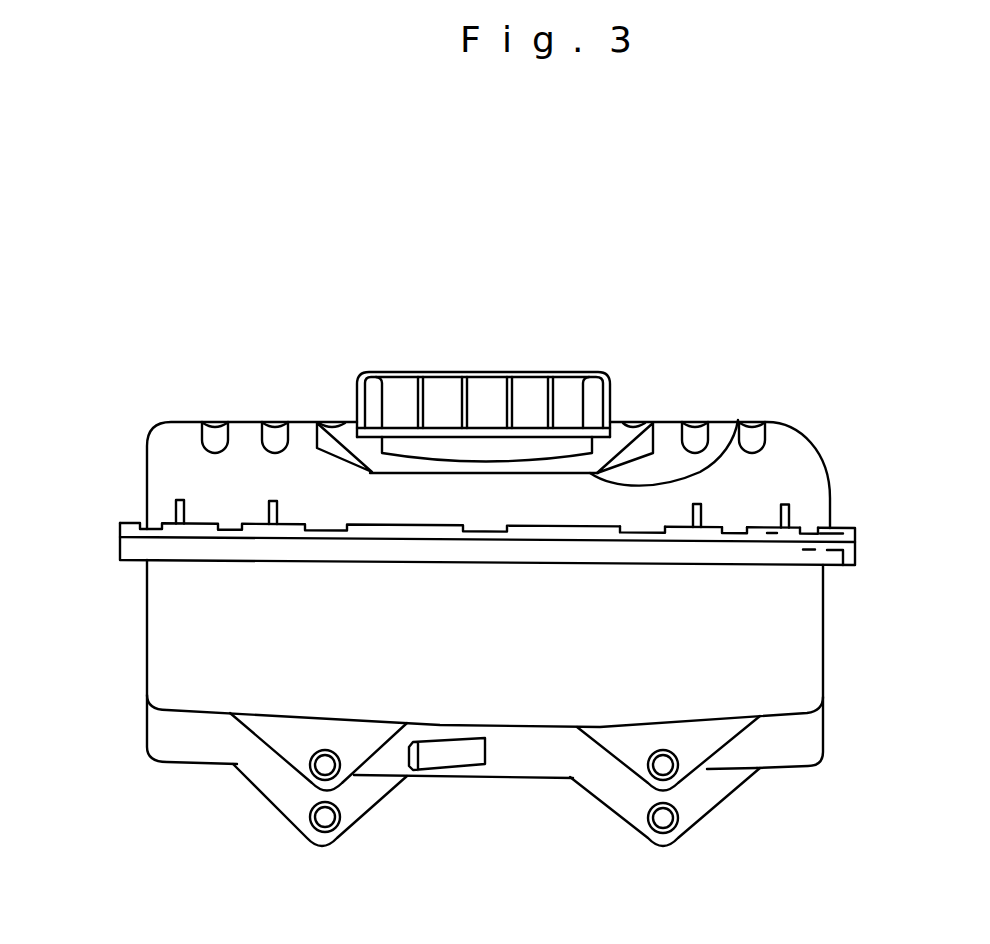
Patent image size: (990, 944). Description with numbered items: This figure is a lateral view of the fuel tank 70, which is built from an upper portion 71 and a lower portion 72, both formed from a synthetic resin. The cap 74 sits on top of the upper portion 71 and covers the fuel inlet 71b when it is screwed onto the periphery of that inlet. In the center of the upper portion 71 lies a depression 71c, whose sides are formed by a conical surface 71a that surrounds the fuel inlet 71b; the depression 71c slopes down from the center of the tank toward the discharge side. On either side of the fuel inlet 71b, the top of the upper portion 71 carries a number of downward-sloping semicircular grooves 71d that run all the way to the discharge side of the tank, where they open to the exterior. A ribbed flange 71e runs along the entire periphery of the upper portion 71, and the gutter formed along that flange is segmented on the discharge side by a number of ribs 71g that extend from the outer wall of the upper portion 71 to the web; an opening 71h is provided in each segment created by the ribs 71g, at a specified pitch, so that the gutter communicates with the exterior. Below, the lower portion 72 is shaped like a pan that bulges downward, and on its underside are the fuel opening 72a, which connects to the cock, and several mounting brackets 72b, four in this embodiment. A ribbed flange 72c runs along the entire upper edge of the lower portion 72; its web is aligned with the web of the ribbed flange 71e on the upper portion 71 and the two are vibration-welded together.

The fuel tank 70 is at (307, 372).
The upper portion 71 is at (148, 442).
The conical surface 71a is at (598, 447).
The fuel inlet 71b is at (631, 421).
The depression 71c is at (738, 421).
The semicircular grooves 71d is at (753, 421).
The ribbed flange 71e is at (856, 534).
The ribs 71g is at (790, 530).
The openings 71h is at (640, 527).
The lower portion 72 is at (825, 678).
The fuel opening 72a is at (442, 773).
The mounting brackets 72b is at (693, 836).
The ribbed flange 72c is at (856, 554).
The cap 74 is at (557, 372).